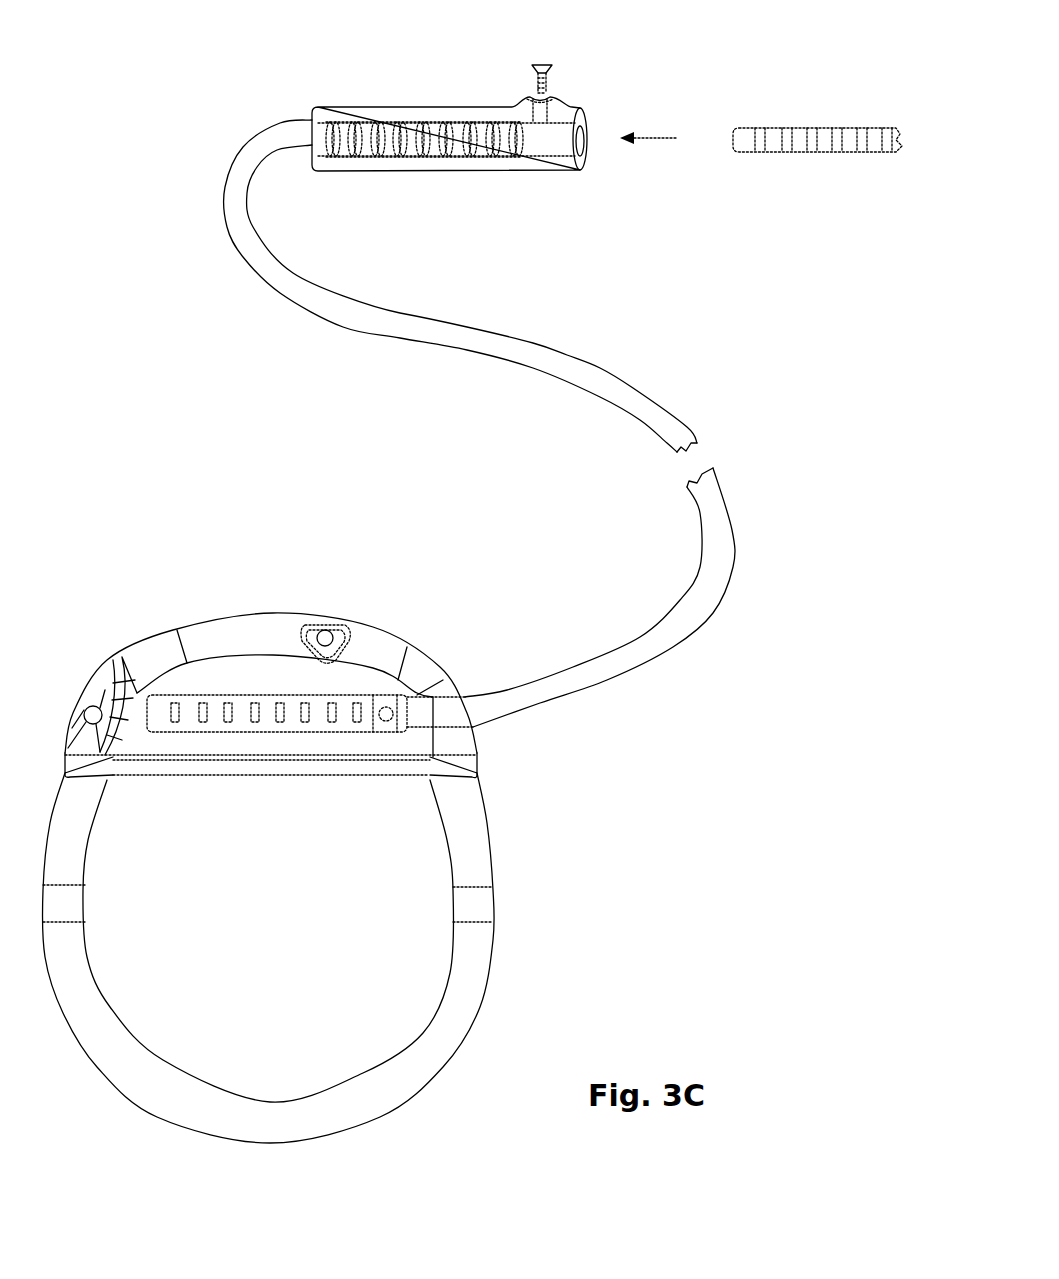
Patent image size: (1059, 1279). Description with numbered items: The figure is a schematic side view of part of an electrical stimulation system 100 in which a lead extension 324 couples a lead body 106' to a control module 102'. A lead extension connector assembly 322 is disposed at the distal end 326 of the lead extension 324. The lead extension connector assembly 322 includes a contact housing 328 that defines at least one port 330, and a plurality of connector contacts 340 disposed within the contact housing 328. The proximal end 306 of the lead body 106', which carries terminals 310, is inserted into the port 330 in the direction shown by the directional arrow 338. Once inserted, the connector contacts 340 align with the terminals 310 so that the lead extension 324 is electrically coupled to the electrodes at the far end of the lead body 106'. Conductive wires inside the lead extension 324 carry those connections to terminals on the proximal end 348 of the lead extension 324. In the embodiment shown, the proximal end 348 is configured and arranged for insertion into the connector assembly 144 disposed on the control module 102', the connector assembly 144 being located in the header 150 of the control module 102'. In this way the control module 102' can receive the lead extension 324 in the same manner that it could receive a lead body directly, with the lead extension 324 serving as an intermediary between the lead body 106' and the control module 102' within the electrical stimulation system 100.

The electrical stimulation system 100 is at (672, 277).
The control module 102' is at (350, 863).
The lead body 106' is at (817, 111).
The connector assembly 144 is at (222, 697).
The header 150 is at (368, 643).
The proximal end 306 is at (786, 106).
The terminals 310 is at (892, 157).
The lead extension connector assembly 322 is at (410, 108).
The lead extension 324 is at (567, 357).
The distal end 326 is at (308, 102).
The contact housing 328 is at (357, 115).
The port 330 is at (597, 157).
The directional arrow 338 is at (655, 137).
The connector contacts 340 is at (525, 180).
The proximal end 348 is at (482, 671).